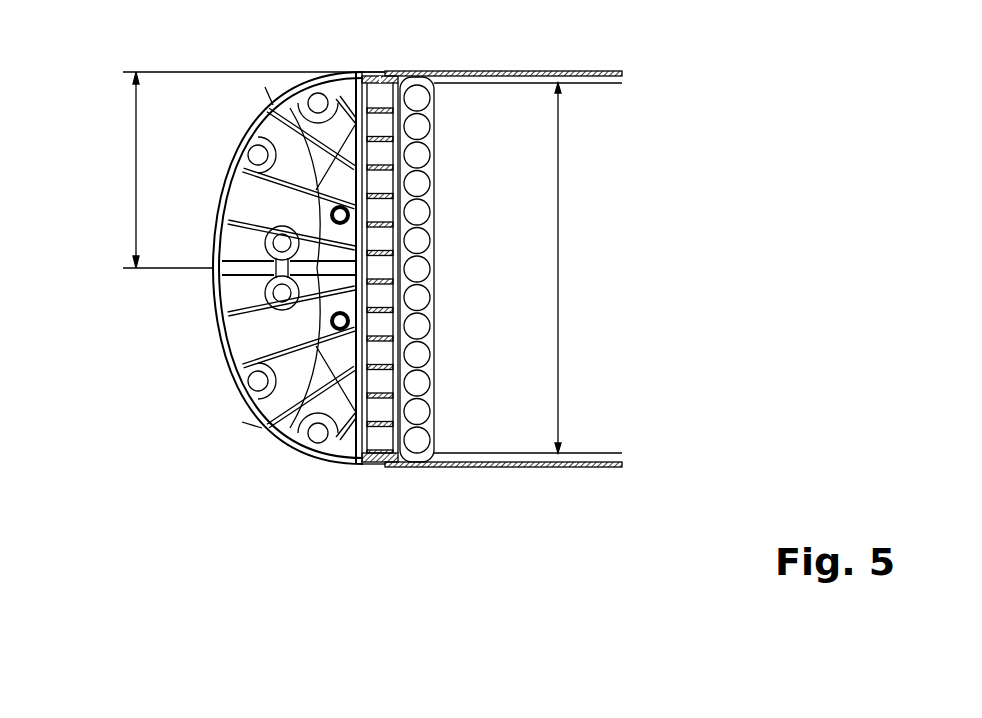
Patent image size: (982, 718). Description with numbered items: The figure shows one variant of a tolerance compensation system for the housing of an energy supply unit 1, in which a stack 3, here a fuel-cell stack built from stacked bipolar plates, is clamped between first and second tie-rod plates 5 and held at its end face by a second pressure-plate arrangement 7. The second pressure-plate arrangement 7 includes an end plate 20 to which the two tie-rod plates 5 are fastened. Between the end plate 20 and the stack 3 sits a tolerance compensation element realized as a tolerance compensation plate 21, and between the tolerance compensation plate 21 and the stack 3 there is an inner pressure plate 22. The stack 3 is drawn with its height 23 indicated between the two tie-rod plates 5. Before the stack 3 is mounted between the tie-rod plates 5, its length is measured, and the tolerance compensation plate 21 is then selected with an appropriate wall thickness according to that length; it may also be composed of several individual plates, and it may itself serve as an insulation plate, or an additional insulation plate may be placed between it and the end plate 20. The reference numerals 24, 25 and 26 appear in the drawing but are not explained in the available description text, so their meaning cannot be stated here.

The energy supply unit 1 is at (708, 95).
The stack 3 is at (525, 186).
The tie-rod plates 5 is at (597, 72).
The second pressure-plate arrangement 7 is at (467, 124).
The end plate 20 is at (323, 450).
The tolerance compensation plate 21 is at (372, 440).
The inner pressure plate 22 is at (422, 458).
The height 23 is at (562, 265).
The housing half height 24 is at (136, 157).
The outer wall 25 is at (268, 100).
The fastening bore 26 is at (245, 147).